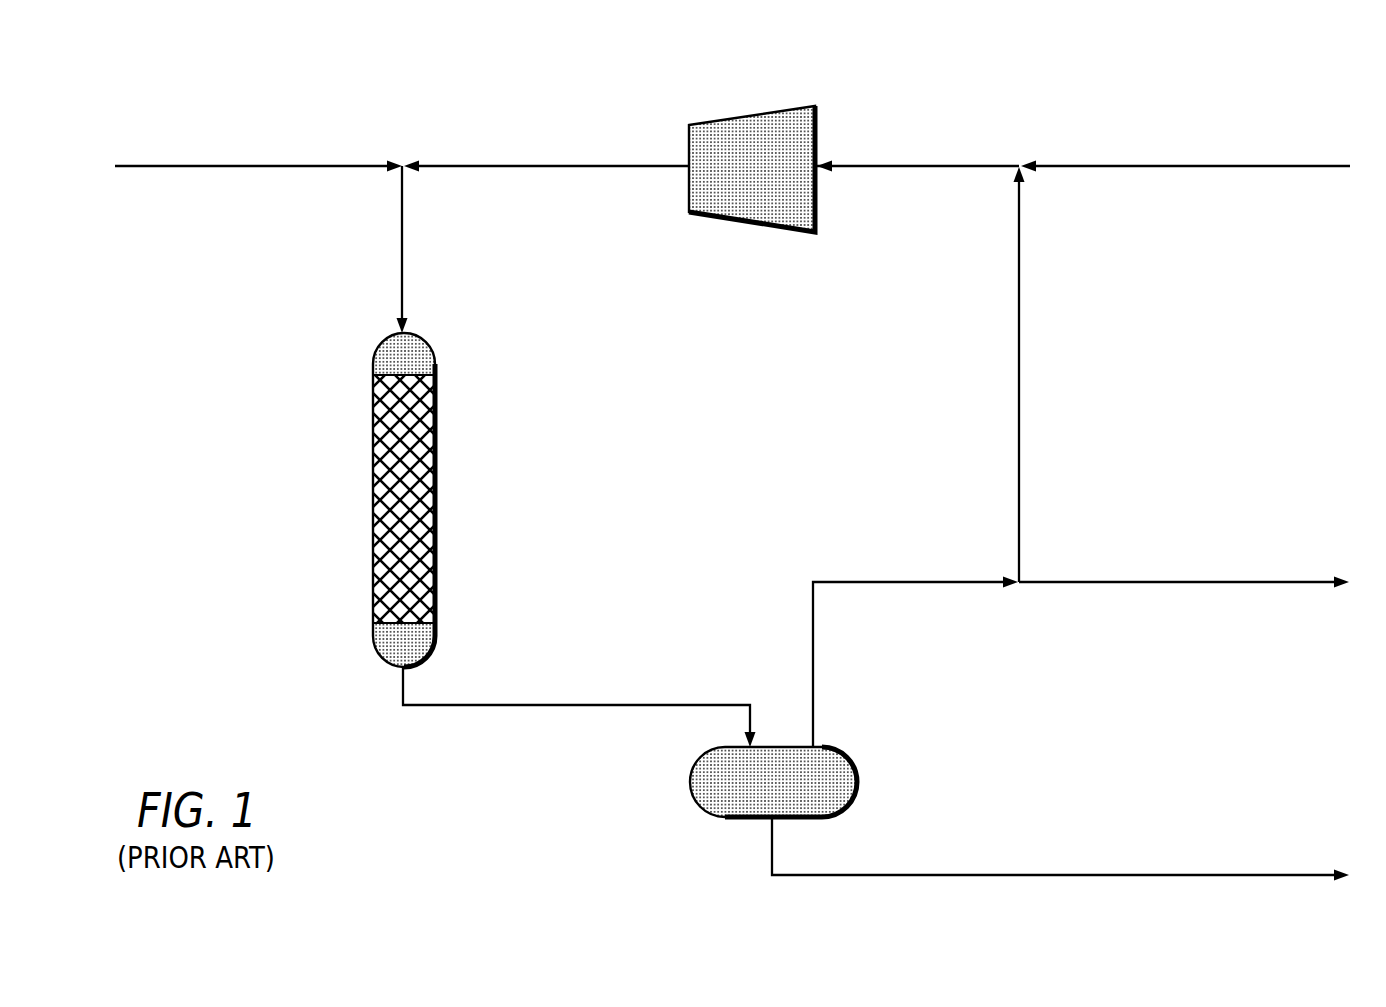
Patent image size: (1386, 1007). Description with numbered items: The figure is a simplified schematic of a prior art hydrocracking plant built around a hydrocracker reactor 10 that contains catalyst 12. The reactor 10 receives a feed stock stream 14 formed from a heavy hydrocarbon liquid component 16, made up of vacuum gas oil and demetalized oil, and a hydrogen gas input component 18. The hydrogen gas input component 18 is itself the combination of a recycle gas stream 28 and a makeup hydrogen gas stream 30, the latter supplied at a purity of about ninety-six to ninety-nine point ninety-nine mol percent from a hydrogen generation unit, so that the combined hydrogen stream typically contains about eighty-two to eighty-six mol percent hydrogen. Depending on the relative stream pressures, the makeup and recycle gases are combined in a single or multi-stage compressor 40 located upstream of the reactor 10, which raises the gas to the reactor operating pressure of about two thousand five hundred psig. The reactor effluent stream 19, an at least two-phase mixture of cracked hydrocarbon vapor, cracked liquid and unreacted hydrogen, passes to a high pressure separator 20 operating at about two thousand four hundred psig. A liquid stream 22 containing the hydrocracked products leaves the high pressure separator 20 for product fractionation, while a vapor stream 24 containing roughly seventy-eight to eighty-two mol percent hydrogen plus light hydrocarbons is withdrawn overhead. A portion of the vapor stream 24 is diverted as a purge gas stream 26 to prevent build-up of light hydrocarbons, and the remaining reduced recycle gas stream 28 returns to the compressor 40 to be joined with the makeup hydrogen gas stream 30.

The hydrocracker reactor 10 is at (312, 358).
The catalyst 12 is at (372, 474).
The feed stock stream 14 is at (402, 238).
The heavy hydrocarbon liquid component 16 is at (210, 167).
The hydrogen gas input component 18 is at (501, 166).
The reactor effluent stream 19 is at (407, 688).
The high pressure separator 20 is at (690, 786).
The liquid stream 22 is at (1056, 873).
The vapor stream 24 is at (950, 581).
The purge gas stream 26 is at (1047, 583).
The recycle gas stream 28 is at (1019, 458).
The makeup hydrogen gas stream 30 is at (1305, 165).
The compressor 40 is at (779, 110).